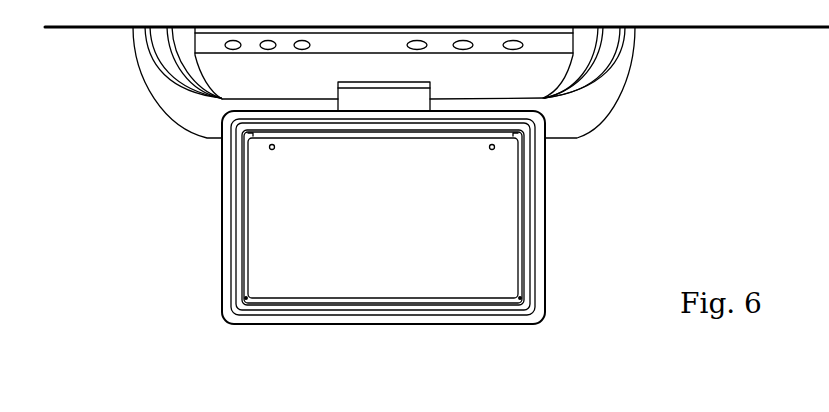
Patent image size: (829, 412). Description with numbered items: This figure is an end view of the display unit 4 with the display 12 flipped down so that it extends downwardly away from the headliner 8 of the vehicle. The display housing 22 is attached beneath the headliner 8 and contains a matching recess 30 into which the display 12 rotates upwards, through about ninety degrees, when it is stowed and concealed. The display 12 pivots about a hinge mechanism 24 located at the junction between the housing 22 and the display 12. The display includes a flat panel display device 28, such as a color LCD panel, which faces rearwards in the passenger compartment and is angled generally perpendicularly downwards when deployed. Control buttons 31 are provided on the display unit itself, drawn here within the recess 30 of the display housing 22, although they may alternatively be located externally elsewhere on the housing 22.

The display unit 4 is at (163, 123).
The headliner 8 is at (66, 27).
The display 12 is at (544, 244).
The display housing 22 is at (627, 84).
The hinge mechanism 24 is at (421, 97).
The flat panel display device 28 is at (510, 190).
The recess 30 is at (300, 85).
The control buttons 31 is at (297, 40).